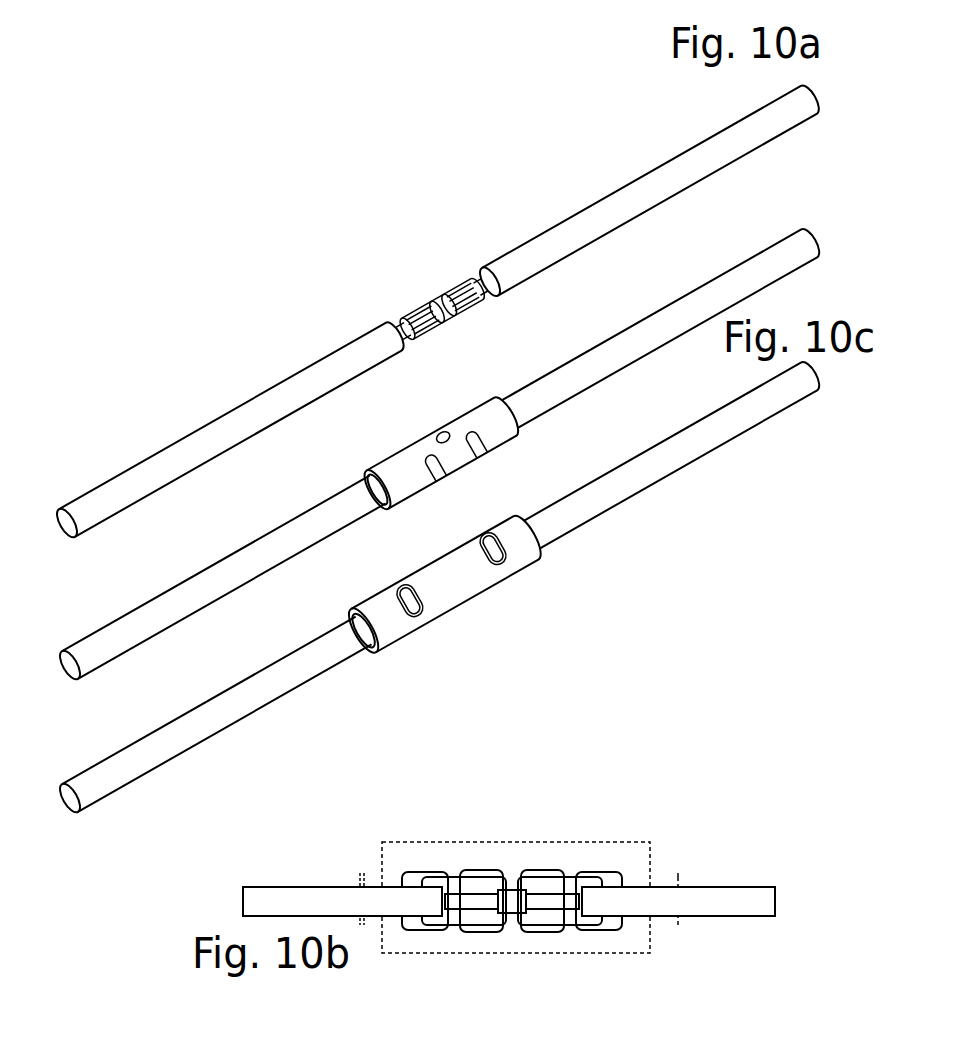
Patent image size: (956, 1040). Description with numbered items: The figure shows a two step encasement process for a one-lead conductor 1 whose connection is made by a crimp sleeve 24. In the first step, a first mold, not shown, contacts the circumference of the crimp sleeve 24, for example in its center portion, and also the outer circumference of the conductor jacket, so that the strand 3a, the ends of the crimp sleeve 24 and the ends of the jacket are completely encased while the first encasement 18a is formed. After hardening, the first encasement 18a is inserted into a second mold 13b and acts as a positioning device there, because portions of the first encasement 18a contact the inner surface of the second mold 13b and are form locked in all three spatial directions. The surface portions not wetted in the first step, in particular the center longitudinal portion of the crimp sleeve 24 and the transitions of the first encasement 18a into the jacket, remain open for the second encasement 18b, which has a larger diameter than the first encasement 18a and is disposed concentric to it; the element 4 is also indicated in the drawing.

In FIG. 10a, the conductor 1 is at (598, 220).
In FIG. 10c, the conductor 1 is at (603, 360).
In FIG. 10b, the conductor 1 is at (325, 903).
In FIG. 10a, the crimp sleeve 24 is at (410, 300).
In FIG. 10b, the crimp sleeve 24 is at (515, 878).
In FIG. 10c, the first encasement 18a is at (478, 447).
In FIG. 10b, the first encasement 18a is at (453, 885).
In FIG. 10c, the second encasement 18b is at (500, 422).
In FIG. 10b, the second encasement 18b is at (410, 878).
In FIG. 10b, the coupling element 4 is at (510, 907).
In FIG. 10b, the strand 3a is at (535, 902).
In FIG. 10b, the second mold 13b is at (653, 932).